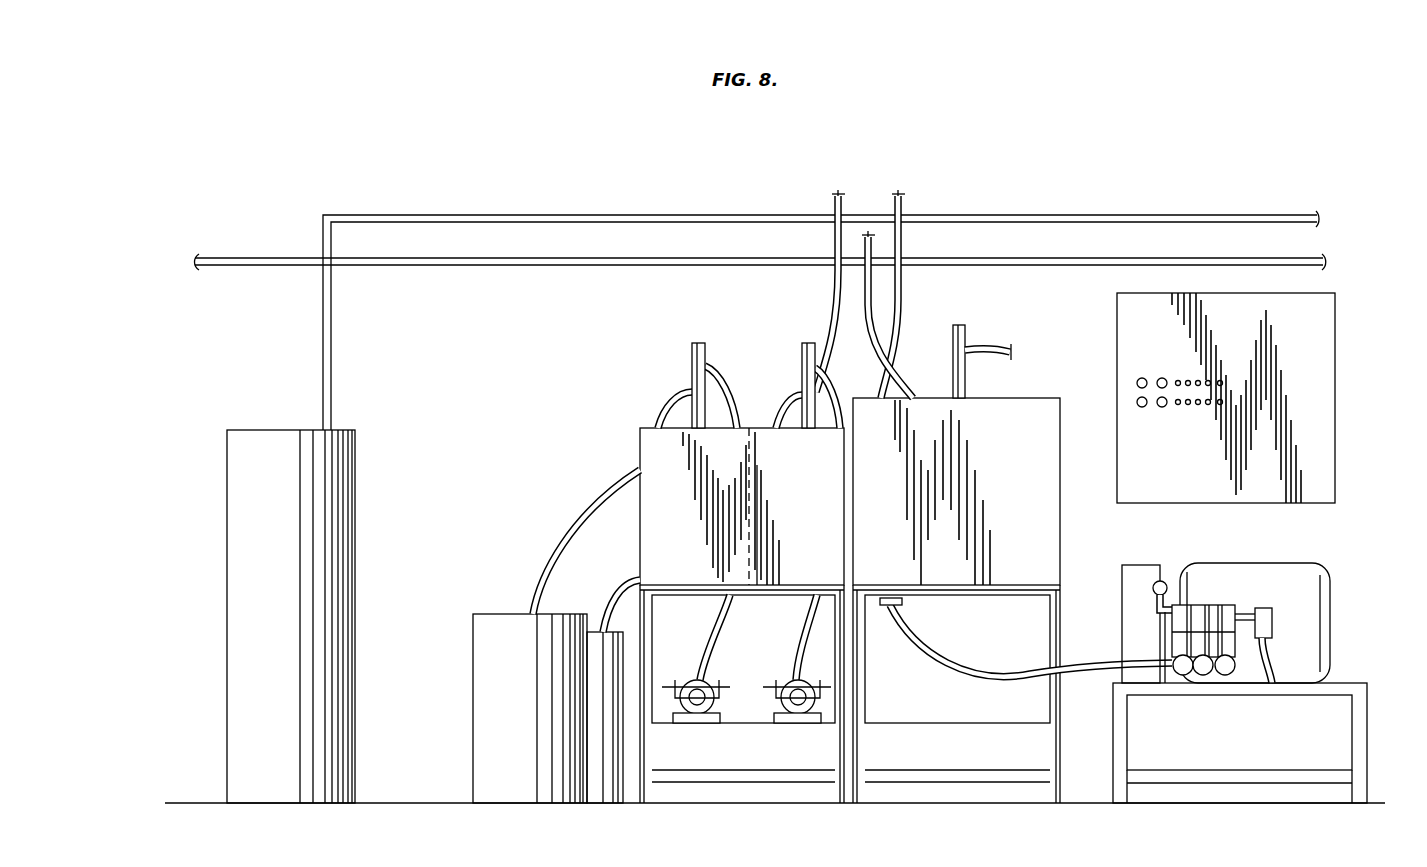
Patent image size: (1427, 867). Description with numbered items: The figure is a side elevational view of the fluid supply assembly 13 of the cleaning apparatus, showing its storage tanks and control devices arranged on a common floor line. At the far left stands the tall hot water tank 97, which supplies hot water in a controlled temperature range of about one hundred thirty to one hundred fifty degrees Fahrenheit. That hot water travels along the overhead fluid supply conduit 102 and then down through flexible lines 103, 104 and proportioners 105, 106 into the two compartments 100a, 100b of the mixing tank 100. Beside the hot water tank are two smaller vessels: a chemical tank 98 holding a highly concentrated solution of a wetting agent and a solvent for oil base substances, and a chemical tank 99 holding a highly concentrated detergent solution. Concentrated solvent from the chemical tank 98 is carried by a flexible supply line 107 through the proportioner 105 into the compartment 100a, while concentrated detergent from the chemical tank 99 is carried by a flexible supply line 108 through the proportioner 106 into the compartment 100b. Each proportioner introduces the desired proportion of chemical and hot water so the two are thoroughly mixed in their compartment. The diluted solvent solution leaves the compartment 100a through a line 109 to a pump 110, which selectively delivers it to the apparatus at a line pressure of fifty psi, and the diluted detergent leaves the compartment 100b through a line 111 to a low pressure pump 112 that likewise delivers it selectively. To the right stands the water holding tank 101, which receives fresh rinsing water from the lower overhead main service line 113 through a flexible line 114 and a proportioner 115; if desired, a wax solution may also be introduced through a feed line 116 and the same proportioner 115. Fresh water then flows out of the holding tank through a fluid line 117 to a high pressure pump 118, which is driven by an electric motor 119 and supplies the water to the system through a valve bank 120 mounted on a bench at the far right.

The cleaning system 13 is at (1084, 189).
The hot water tank 97 is at (232, 565).
The chemical tank 98 is at (474, 672).
The chemical tank 99 is at (625, 646).
The mixing tank 100 is at (742, 615).
The compartment 100a is at (670, 546).
The compartment 100b is at (820, 521).
The water holding tank 101 is at (1047, 527).
The fluid supply conduit 102 is at (627, 212).
The flexible line 103 is at (832, 298).
The flexible line 104 is at (902, 307).
The proportioner 105 is at (692, 368).
The proportioner 106 is at (802, 350).
The flexible supply line 107 is at (584, 525).
The flexible supply line 108 is at (619, 604).
The line 109 is at (721, 652).
The pump 110 is at (695, 712).
The line 111 is at (801, 628).
The low pressure pump 112 is at (797, 712).
The main service line 113 is at (1064, 266).
The flexible line 114 is at (903, 378).
The proportioner 115 is at (968, 385).
The feed line 116 is at (992, 350).
The fluid line 117 is at (1016, 652).
The high pressure pump 118 is at (1137, 573).
The electric motor 119 is at (1310, 600).
The valve bank 120 is at (1222, 606).